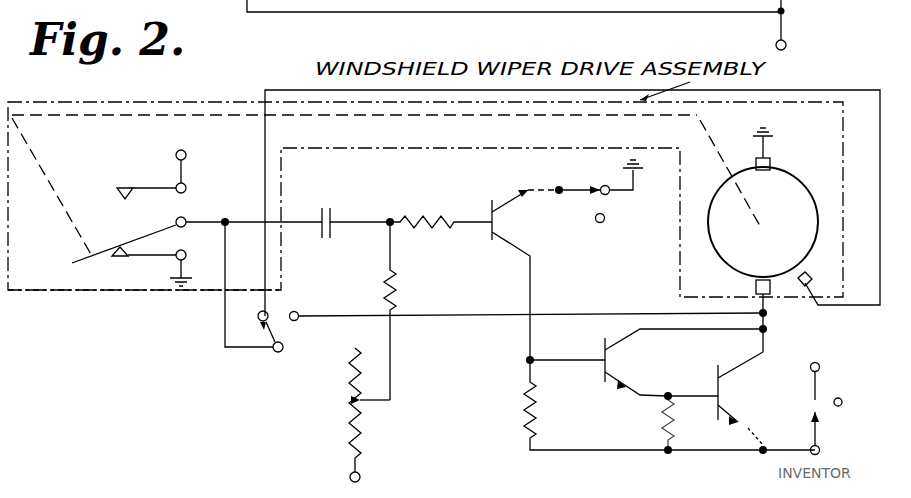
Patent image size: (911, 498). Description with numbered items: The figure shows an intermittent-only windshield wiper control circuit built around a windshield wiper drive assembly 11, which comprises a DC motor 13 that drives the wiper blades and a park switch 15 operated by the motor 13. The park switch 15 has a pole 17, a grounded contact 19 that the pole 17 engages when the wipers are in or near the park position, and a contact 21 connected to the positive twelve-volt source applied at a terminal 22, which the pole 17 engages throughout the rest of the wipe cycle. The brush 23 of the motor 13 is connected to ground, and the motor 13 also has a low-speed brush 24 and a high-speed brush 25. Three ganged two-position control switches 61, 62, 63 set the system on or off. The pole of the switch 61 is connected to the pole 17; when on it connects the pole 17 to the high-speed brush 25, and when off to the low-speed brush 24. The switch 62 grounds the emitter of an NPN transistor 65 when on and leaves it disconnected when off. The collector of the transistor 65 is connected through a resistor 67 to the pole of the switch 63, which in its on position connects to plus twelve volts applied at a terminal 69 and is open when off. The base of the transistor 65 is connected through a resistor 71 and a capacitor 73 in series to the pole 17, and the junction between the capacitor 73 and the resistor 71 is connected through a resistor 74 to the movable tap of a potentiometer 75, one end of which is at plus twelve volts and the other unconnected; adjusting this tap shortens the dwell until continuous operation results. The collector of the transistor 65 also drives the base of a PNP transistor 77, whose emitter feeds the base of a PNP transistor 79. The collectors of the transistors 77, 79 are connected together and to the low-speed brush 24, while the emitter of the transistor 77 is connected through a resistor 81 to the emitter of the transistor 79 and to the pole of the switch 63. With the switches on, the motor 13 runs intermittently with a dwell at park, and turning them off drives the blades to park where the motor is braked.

The windshield wiper drive assembly 11 is at (125, 295).
The DC motor 13 is at (810, 192).
The park switch 15 is at (105, 207).
The pole 17 is at (128, 240).
The grounded contact 19 is at (140, 258).
The contact 21 is at (132, 188).
The terminal 22 is at (776, 45).
The brush 23 is at (772, 165).
The low-speed brush 24 is at (755, 288).
The high-speed brush 25 is at (812, 275).
The control switch 61 is at (270, 332).
The control switch 62 is at (577, 190).
The control switch 63 is at (822, 434).
The NPN transistor 65 is at (488, 204).
The resistor 67 is at (525, 402).
The terminal 69 is at (810, 364).
The resistor 71 is at (418, 212).
The capacitor 73 is at (333, 210).
The resistor 74 is at (403, 290).
The potentiometer 75 is at (345, 400).
The PNP transistor 77 is at (606, 352).
The PNP transistor 79 is at (715, 382).
The resistor 81 is at (665, 422).